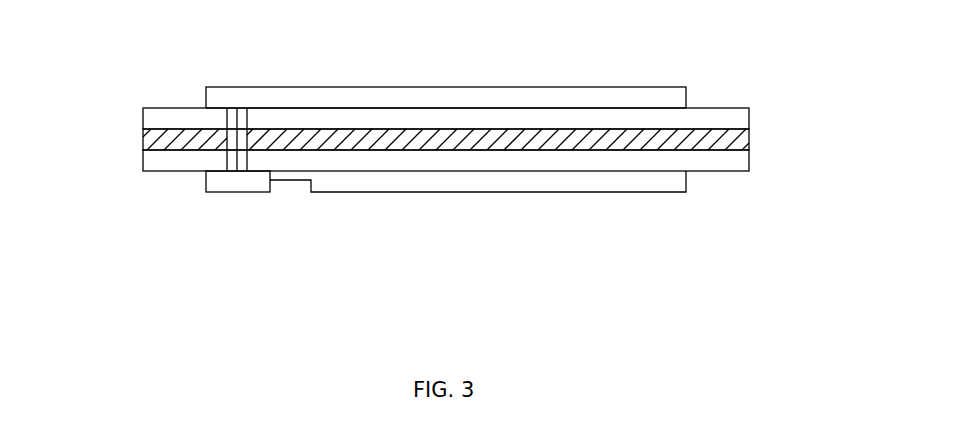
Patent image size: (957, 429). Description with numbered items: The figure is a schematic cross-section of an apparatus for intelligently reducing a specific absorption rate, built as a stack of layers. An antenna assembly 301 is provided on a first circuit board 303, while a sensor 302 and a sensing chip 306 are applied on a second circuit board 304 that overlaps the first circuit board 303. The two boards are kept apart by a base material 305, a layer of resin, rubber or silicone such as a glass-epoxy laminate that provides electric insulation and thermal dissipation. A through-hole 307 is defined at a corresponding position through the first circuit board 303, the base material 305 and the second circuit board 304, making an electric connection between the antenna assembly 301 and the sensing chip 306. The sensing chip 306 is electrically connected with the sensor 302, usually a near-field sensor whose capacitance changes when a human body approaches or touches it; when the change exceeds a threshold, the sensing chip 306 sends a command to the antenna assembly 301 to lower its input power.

The antenna assembly 301 is at (624, 88).
The sensor 302 is at (624, 192).
The first circuit board 303 is at (749, 111).
The second circuit board 304 is at (749, 163).
The base material 305 is at (143, 137).
The sensing chip 306 is at (236, 192).
The through-hole 307 is at (241, 128).